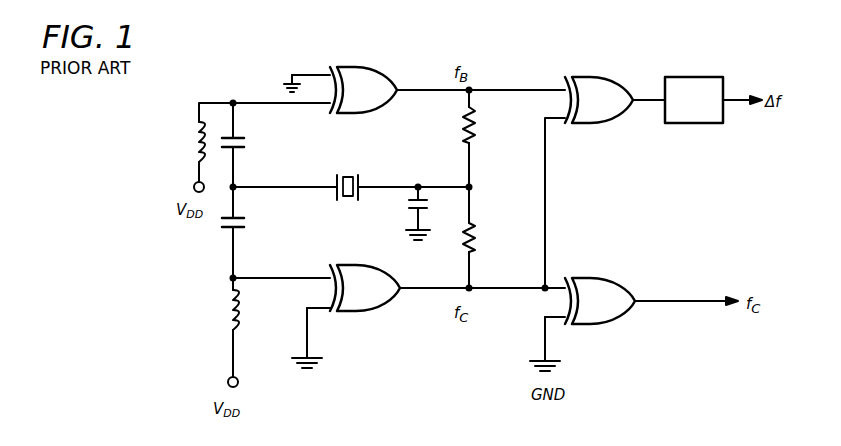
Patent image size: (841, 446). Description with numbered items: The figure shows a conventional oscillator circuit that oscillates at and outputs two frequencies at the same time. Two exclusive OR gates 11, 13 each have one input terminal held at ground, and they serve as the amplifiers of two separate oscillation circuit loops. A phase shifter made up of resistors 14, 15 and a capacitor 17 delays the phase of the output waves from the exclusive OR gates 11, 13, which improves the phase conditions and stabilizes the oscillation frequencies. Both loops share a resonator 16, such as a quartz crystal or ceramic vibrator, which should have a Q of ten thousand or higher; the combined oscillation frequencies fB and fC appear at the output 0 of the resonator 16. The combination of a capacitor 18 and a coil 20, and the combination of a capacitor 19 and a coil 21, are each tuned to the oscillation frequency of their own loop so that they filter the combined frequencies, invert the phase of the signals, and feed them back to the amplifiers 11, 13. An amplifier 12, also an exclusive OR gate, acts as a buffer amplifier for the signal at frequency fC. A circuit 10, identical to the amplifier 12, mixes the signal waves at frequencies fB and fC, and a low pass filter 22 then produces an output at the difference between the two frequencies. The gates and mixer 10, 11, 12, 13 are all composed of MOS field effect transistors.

The output 0 is at (238, 186).
The circuit 10 is at (616, 63).
The exclusive OR gate 11 is at (400, 62).
The amplifier 12 is at (631, 270).
The exclusive OR gate 13 is at (386, 305).
The resistor 14 is at (476, 129).
The resistor 15 is at (476, 237).
The resonator 16 is at (345, 173).
The capacitor 17 is at (413, 200).
The capacitor 18 is at (245, 144).
The capacitor 19 is at (246, 224).
The coil 20 is at (196, 133).
The coil 21 is at (230, 303).
The low pass filter 22 is at (702, 66).